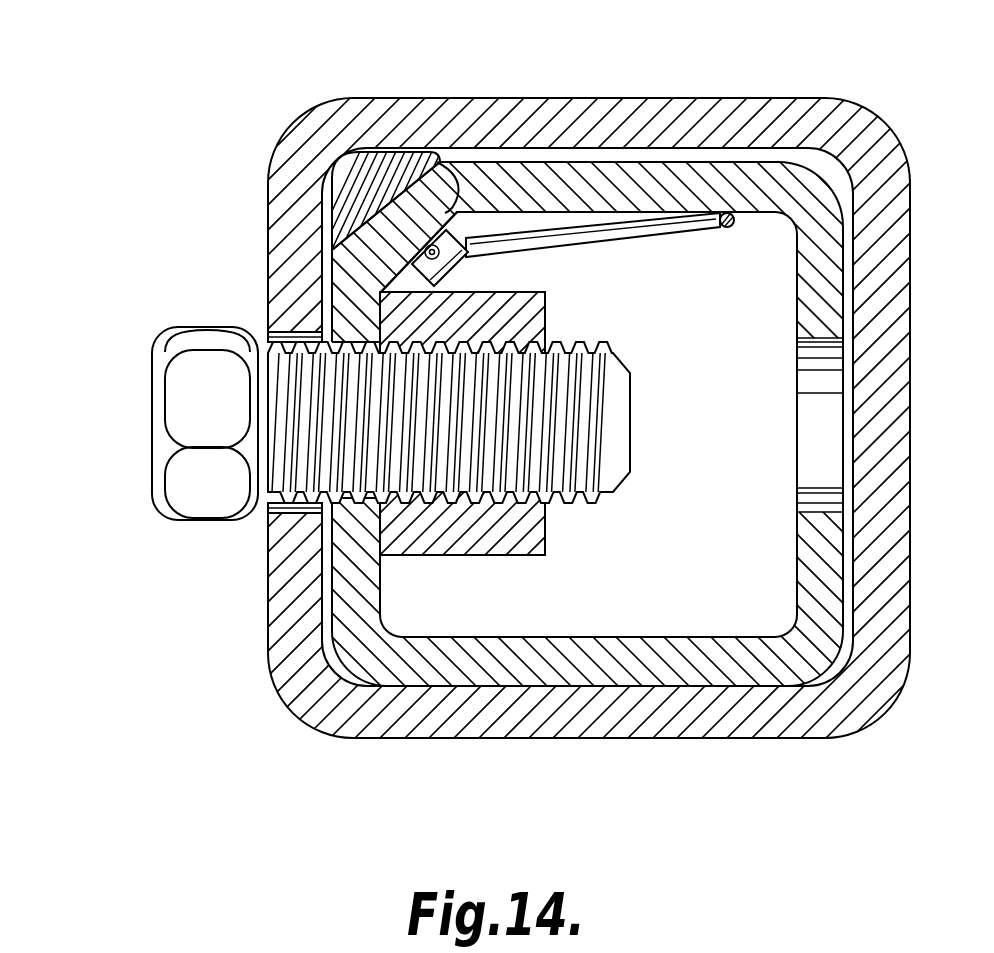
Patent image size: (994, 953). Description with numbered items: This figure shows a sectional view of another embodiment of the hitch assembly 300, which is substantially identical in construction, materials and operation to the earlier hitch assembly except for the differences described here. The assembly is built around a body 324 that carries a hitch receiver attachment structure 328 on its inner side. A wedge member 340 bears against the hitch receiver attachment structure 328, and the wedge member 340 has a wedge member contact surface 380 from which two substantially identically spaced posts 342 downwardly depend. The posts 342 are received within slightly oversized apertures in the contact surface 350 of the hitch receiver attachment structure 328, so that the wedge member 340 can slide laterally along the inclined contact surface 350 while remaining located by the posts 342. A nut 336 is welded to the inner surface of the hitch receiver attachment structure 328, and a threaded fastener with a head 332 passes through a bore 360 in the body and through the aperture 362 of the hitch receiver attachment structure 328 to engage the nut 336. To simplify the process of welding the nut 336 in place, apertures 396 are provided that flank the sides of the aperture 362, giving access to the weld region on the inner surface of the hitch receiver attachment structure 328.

The hitch assembly 300 is at (130, 132).
The body 324 is at (647, 98).
The hitch receiver attachment structure 328 is at (752, 160).
The bolt head 332 is at (195, 327).
The nut 336 is at (548, 533).
The wedge member 340 is at (383, 210).
The posts 342 is at (464, 232).
The contact surface 350 is at (455, 190).
The body bore 360 is at (268, 330).
The aperture 362 is at (338, 298).
The wedge member contact surface 380 is at (405, 188).
The apertures 396 is at (633, 230).